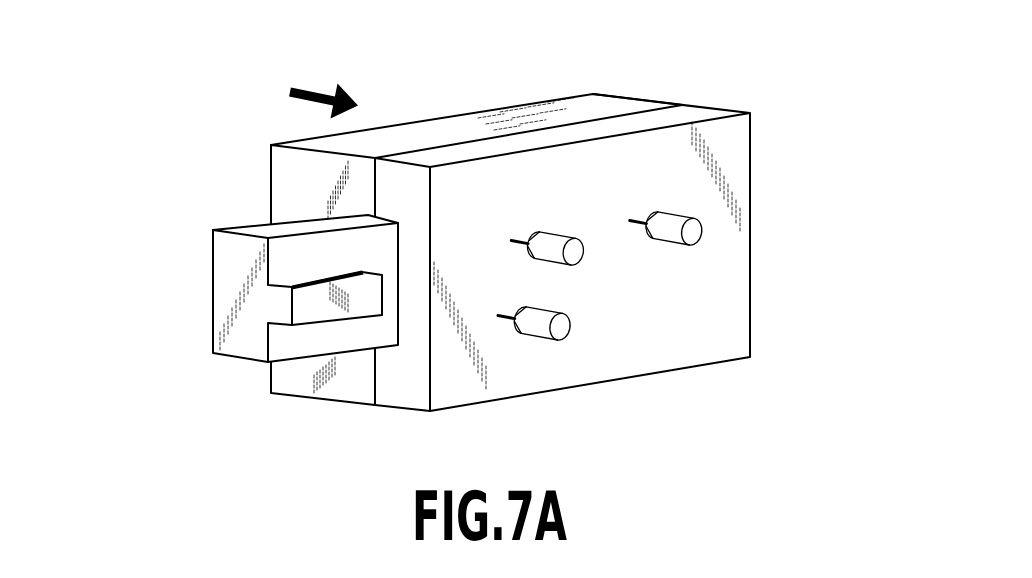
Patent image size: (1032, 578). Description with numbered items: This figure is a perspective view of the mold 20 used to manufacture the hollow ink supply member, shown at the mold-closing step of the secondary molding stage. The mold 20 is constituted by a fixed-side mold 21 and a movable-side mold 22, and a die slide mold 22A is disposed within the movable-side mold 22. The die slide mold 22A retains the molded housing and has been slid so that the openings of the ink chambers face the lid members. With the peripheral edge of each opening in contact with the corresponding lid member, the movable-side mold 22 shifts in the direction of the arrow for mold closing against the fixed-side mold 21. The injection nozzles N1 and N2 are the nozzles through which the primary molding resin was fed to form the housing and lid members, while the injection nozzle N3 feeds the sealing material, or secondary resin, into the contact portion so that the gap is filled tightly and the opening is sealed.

The mold 20 is at (750, 53).
The fixed-side mold 21 is at (723, 200).
The movable-side mold 22 is at (302, 171).
The die slide mold 22A is at (230, 302).
The injection nozzle N1 is at (670, 237).
The injection nozzle N2 is at (577, 256).
The injection nozzle N3 is at (542, 331).